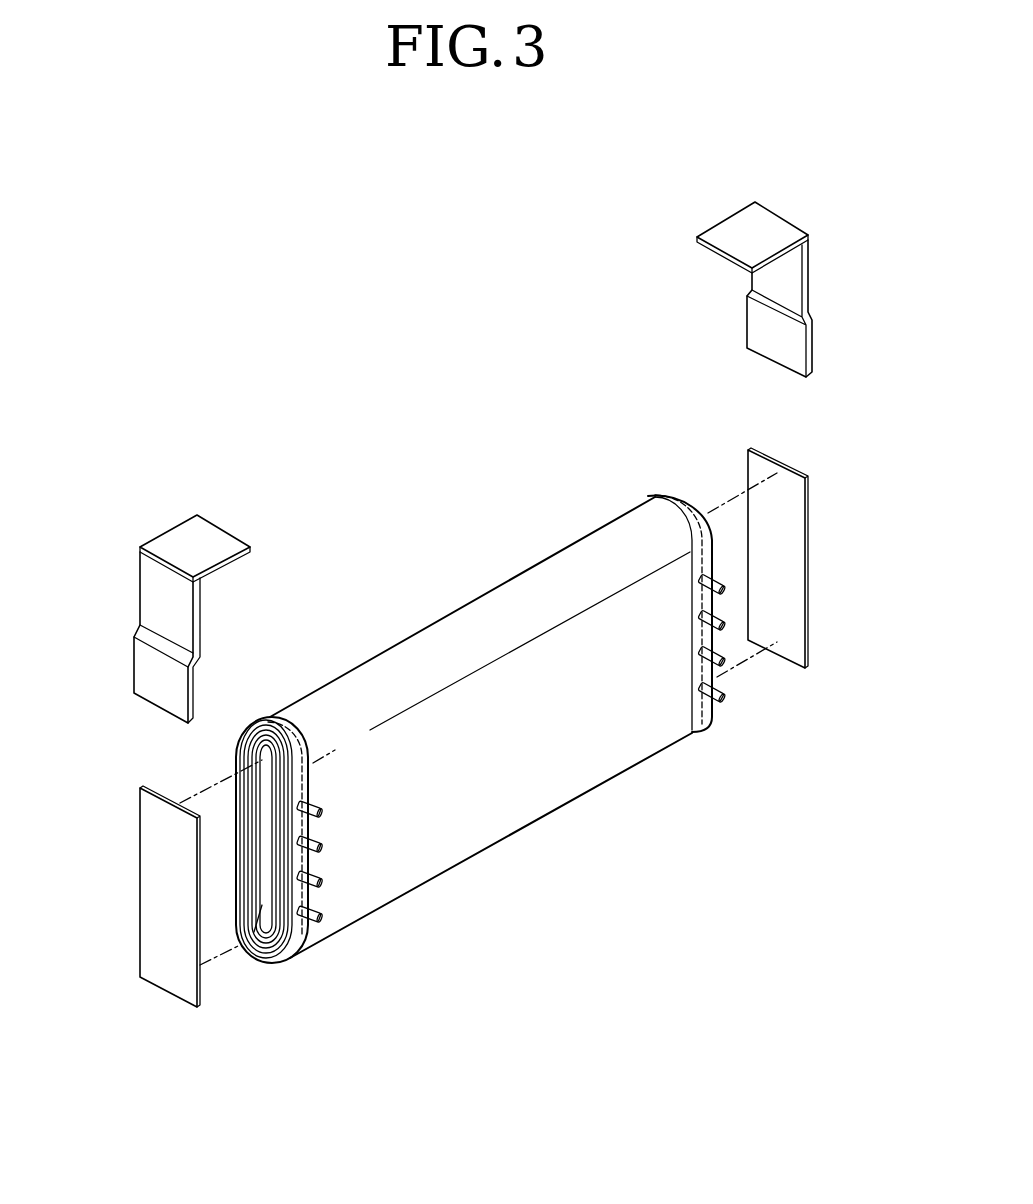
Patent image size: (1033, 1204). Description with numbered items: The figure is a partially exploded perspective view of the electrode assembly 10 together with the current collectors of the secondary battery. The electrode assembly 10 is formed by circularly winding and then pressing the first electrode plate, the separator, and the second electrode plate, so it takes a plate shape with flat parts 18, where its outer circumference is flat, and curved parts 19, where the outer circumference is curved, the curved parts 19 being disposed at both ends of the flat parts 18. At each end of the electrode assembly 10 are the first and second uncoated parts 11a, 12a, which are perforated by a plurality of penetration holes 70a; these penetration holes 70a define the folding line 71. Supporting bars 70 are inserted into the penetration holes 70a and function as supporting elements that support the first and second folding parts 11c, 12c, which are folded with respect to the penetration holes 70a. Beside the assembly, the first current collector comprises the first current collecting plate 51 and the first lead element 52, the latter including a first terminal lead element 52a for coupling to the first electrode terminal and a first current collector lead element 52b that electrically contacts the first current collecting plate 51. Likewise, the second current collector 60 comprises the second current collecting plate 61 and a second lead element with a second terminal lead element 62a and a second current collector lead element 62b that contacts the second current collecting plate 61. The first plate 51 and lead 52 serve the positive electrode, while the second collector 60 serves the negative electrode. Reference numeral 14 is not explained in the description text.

The electrode assembly 10 is at (606, 792).
The first uncoated part 11a is at (308, 950).
The first folding part 11c is at (291, 958).
The second uncoated part 12a is at (697, 731).
The second folding part 12c is at (709, 713).
The electrode assembly 14 is at (255, 950).
The flat parts 18 is at (513, 745).
The curved parts 19 is at (473, 857).
The first current collecting plate 51 is at (136, 876).
The first lead element 52 is at (153, 586).
The first terminal lead element 52a is at (178, 535).
The first current collector lead element 52b is at (146, 672).
The second current collector 60 is at (762, 259).
The second current collecting plate 61 is at (815, 530).
The second terminal lead element 62a is at (737, 225).
The second current collector lead element 62b is at (810, 344).
The supporting bars 70 is at (321, 887).
The penetration holes 70a is at (307, 843).
The folding line 71 is at (312, 872).